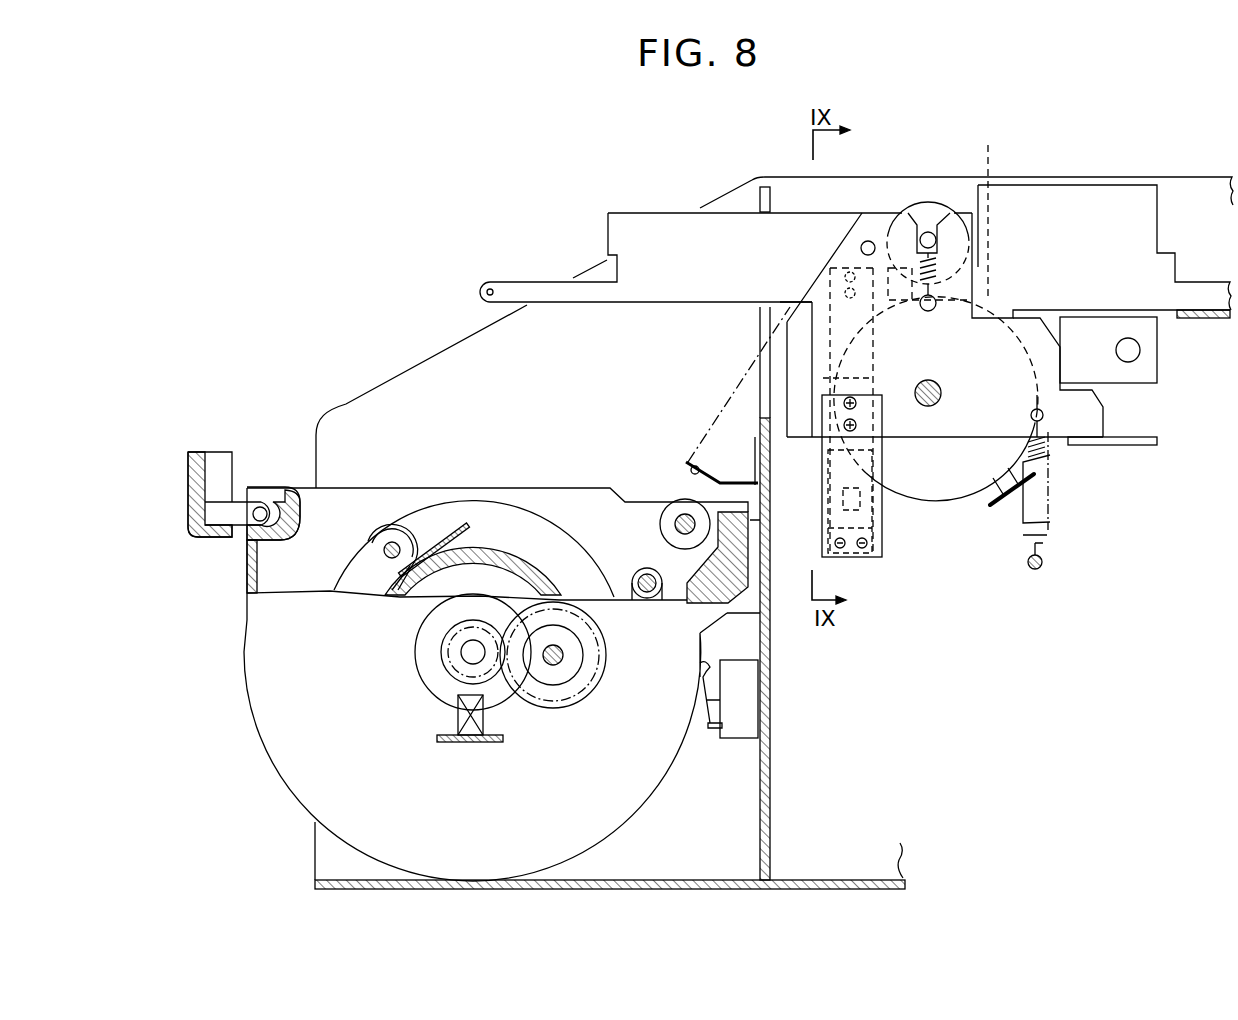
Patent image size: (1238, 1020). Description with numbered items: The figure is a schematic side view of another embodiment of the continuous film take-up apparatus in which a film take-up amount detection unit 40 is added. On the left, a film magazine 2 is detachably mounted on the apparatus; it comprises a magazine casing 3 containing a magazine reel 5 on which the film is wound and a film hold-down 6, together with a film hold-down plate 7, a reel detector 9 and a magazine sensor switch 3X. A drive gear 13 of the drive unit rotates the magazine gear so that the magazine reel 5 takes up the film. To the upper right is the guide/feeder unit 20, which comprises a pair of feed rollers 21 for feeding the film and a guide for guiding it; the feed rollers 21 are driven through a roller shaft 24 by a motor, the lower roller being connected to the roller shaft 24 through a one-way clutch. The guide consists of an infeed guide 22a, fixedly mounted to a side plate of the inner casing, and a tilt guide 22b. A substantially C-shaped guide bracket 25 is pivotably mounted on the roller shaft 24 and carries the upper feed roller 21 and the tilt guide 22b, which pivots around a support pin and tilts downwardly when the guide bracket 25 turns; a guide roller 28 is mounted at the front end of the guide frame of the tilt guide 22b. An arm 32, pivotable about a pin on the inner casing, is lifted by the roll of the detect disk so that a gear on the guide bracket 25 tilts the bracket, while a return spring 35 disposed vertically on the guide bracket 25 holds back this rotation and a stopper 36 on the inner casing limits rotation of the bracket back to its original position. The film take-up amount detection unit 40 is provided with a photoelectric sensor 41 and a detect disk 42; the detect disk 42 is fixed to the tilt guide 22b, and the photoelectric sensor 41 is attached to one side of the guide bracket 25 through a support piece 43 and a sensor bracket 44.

The film magazine 2 is at (188, 501).
The magazine casing 3 is at (258, 633).
The magazine reel 5 is at (483, 547).
The film hold-down 6 is at (352, 555).
The film hold-down plate 7 is at (447, 533).
The reel detector 9 is at (480, 718).
The drive gear 13 is at (593, 685).
The magazine sensor switch 3X is at (735, 730).
The guide/feeder unit 20 is at (661, 207).
The feed rollers 21 is at (930, 203).
The infeed guide 22a is at (1057, 185).
The tilt guide 22b is at (858, 213).
The roller shaft 24 is at (937, 405).
The guide bracket 25 is at (823, 275).
The guide roller 28 is at (483, 287).
The arm 32 is at (1157, 367).
The return spring 35 is at (1050, 523).
The stopper 36 is at (1148, 447).
The film take-up amount detection unit 40 is at (810, 479).
The photoelectric sensor 41 is at (866, 548).
The detect disk 42 is at (826, 378).
The support piece 43 is at (843, 550).
The sensor bracket 44 is at (882, 505).